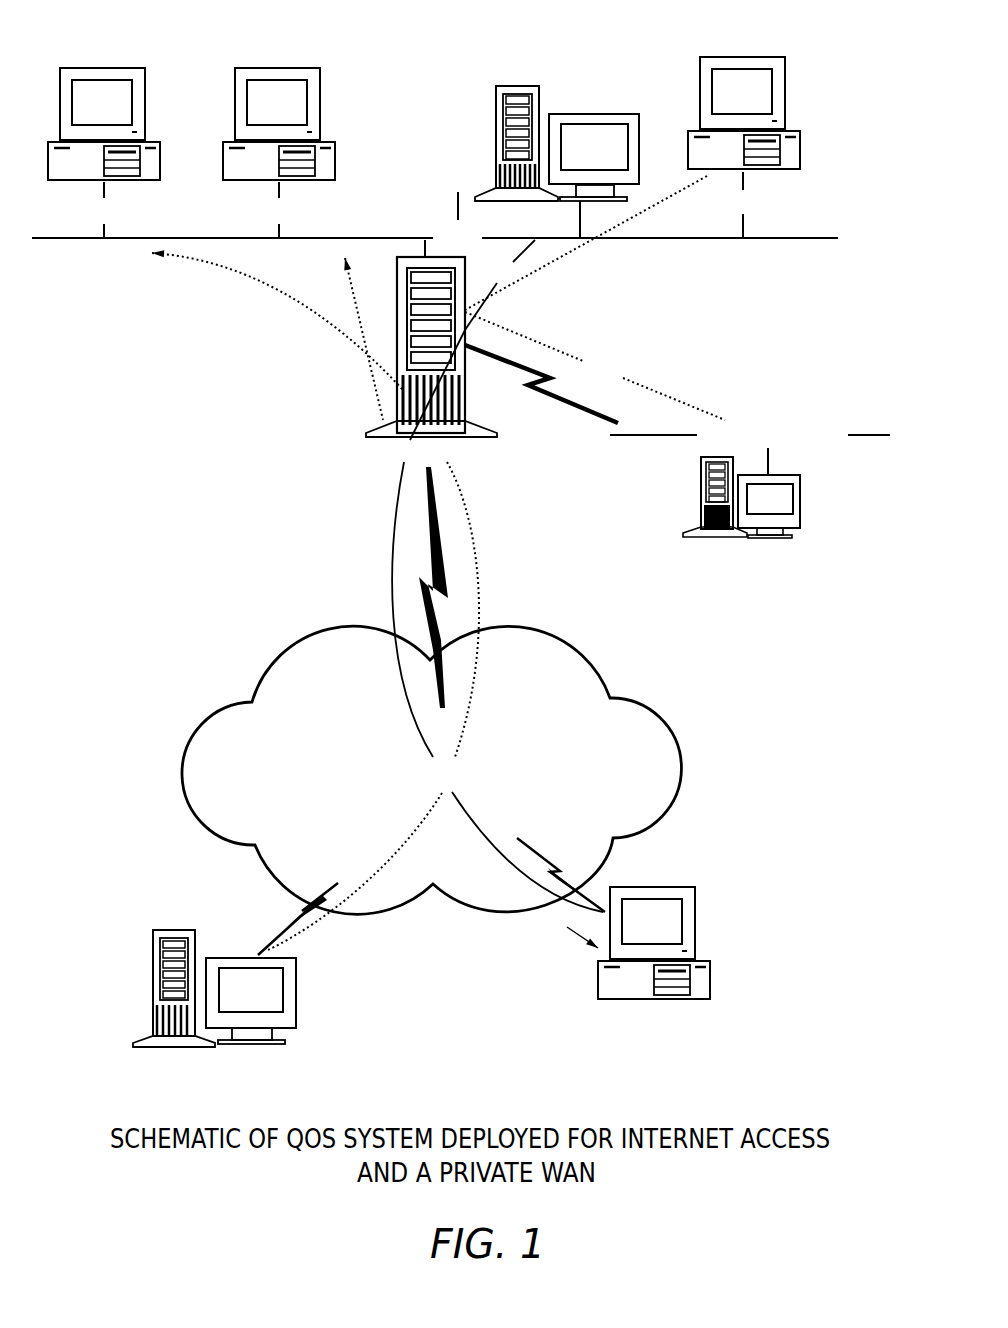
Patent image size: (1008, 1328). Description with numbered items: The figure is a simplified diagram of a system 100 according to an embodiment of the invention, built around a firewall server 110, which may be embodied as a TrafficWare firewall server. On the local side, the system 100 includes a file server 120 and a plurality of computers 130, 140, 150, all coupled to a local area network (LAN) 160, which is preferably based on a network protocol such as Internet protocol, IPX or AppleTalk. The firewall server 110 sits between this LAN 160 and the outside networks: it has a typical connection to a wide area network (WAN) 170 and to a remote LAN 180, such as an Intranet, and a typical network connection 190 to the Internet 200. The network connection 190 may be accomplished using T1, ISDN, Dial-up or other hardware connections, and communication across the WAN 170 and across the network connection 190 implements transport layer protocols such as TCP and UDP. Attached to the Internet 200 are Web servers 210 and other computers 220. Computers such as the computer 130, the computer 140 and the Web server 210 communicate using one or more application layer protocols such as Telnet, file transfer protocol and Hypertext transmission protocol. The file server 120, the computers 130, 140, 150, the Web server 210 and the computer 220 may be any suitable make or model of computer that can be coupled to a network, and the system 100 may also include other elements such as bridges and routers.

The system 100 is at (842, 92).
The firewall server 110 is at (396, 353).
The file server 120 is at (557, 137).
The computer 130 is at (105, 129).
The computer 140 is at (281, 135).
The computer 150 is at (749, 127).
The local area network (LAN) 160 is at (464, 222).
The wide area network (WAN) 170 is at (549, 420).
The remote LAN 180 is at (770, 479).
The network connection 190 is at (540, 587).
The Internet 200 is at (467, 770).
The Web server 210 is at (252, 1006).
The computer 220 is at (662, 932).